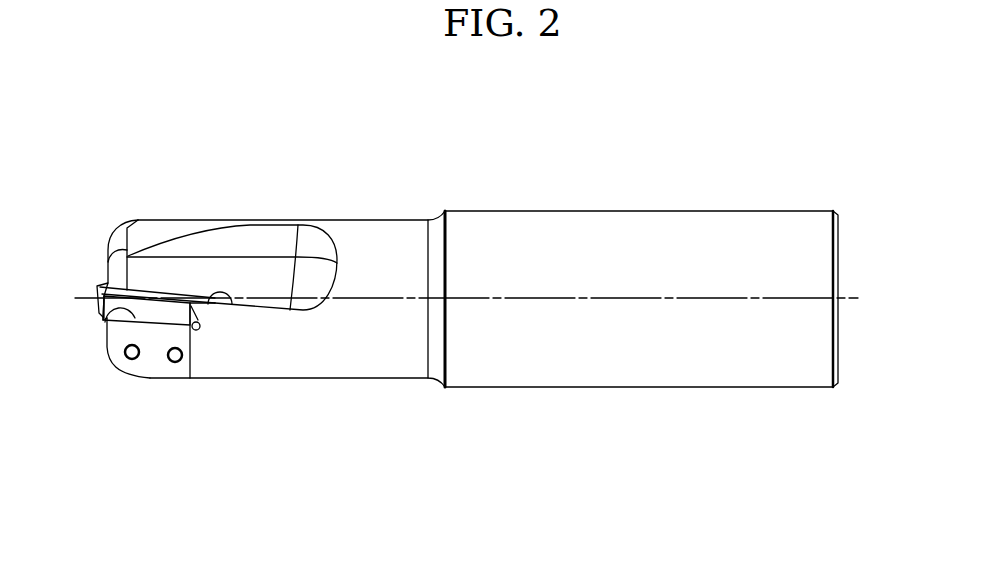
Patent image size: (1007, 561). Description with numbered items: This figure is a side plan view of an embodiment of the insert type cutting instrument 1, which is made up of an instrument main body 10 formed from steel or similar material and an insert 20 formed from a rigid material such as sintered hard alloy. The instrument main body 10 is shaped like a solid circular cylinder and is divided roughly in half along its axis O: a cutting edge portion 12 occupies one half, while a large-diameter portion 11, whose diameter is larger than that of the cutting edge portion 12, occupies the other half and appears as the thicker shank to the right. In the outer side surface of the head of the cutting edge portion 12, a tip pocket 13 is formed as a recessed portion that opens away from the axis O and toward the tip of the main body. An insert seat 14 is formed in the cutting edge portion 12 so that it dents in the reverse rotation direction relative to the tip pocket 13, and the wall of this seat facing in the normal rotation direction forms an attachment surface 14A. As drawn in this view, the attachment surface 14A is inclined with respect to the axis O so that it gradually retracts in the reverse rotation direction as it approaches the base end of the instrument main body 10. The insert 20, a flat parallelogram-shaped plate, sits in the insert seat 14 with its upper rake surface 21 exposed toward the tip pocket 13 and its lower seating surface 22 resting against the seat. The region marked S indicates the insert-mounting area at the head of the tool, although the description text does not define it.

The insert type cutting instrument 1 is at (737, 82).
The instrument main body 10 is at (575, 186).
The large-diameter portion 11 is at (700, 228).
The cutting edge portion 12 is at (395, 226).
The tip pocket 13 is at (315, 282).
The insert seat 14 is at (227, 337).
The attachment surface 14A is at (103, 310).
The insert 20 is at (93, 282).
The rake surface 21 is at (160, 295).
The seating surface 22 is at (147, 323).
The insert unit S is at (193, 142).
The axis O is at (858, 298).